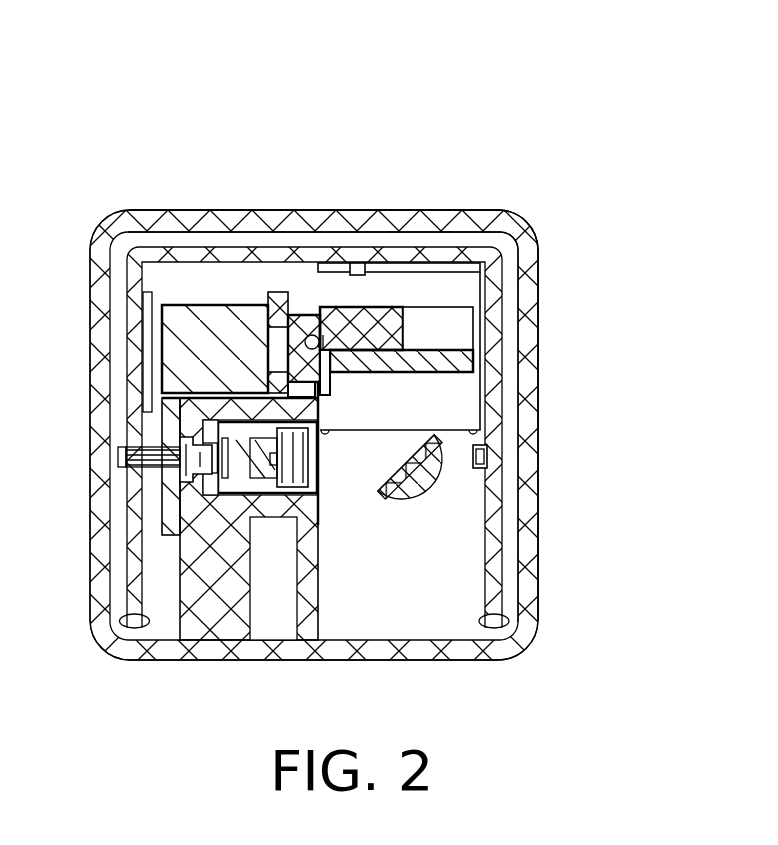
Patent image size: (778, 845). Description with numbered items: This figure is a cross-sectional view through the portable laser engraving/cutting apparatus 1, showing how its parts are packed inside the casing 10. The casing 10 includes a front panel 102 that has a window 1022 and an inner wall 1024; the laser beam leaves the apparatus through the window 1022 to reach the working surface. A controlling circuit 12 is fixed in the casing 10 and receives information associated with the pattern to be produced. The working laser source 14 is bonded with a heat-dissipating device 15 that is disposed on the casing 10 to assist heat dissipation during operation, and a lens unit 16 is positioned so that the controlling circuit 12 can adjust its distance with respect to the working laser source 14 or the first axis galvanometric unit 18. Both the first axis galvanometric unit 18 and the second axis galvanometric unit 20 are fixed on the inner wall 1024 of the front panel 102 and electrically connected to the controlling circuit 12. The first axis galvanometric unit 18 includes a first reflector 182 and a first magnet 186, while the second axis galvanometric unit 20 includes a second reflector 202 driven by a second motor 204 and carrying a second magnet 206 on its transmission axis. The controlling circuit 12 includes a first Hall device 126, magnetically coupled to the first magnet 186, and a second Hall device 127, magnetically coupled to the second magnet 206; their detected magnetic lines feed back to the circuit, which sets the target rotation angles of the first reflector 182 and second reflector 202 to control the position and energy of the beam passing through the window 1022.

The portable laser engraving/cutting apparatus 1 is at (251, 70).
The casing 10 is at (414, 652).
The front panel 102 is at (515, 352).
The window 1022 is at (482, 398).
The inner wall 1024 is at (468, 240).
The controlling circuit 12 is at (143, 255).
The second Hall device 127 is at (366, 270).
The first Hall device 126 is at (487, 455).
The working laser source 14 is at (180, 475).
The heat-dissipating device 15 is at (170, 433).
The lens unit 16 is at (278, 503).
The first axis galvanometric unit 18 is at (608, 508).
The first reflector 182 is at (440, 467).
The first magnet 186 is at (438, 477).
The second axis galvanometric unit 20 is at (408, 152).
The second reflector 202 is at (427, 353).
The second motor 204 is at (212, 340).
The second magnet 206 is at (338, 300).